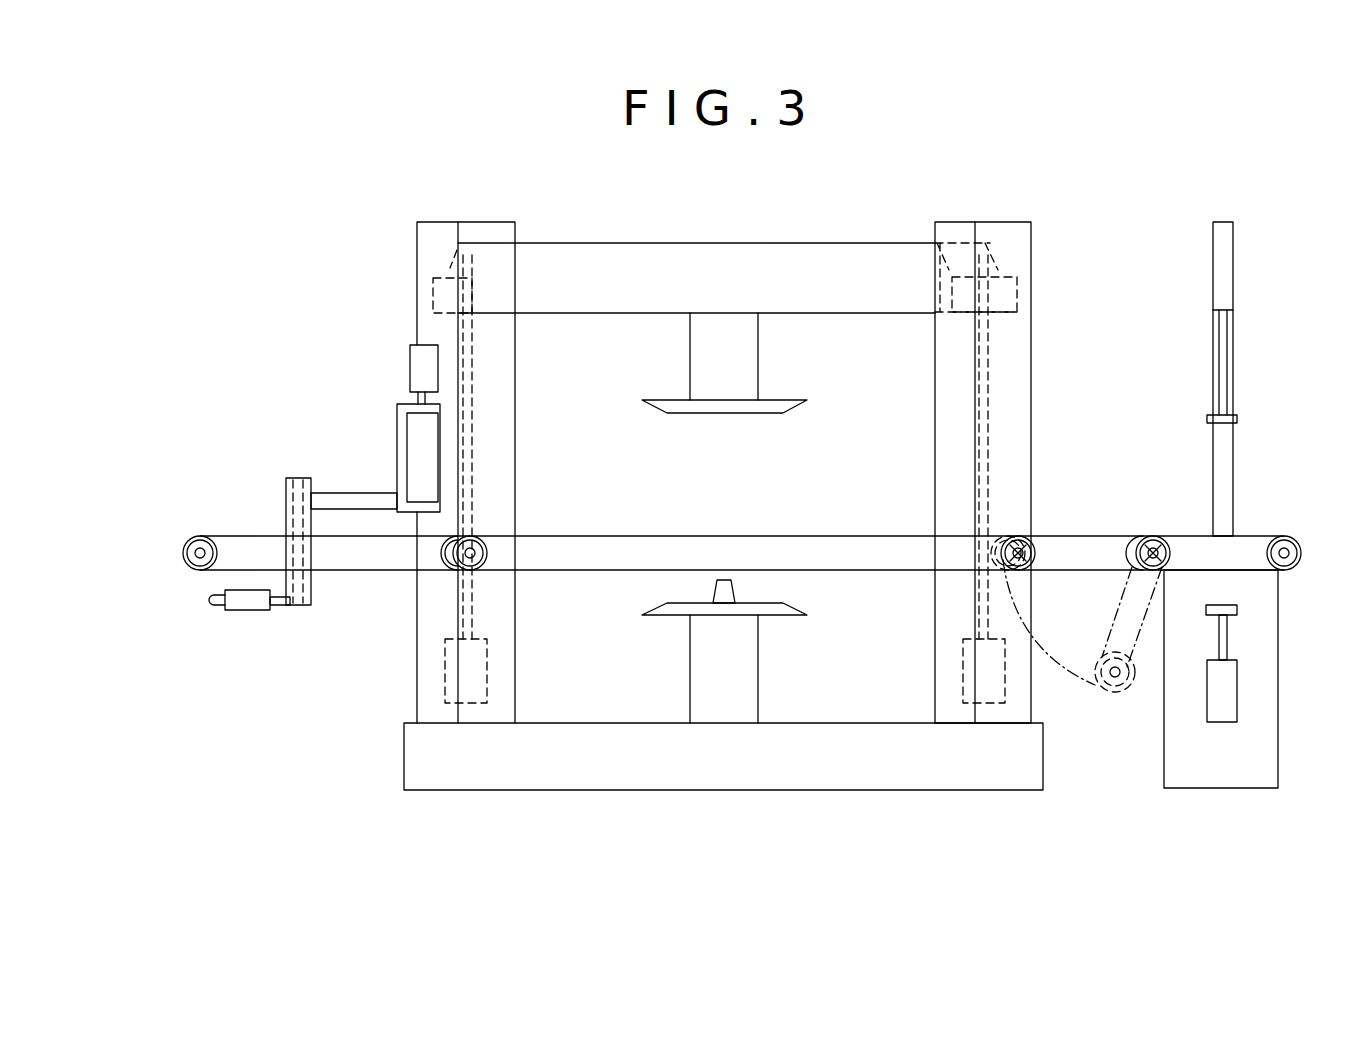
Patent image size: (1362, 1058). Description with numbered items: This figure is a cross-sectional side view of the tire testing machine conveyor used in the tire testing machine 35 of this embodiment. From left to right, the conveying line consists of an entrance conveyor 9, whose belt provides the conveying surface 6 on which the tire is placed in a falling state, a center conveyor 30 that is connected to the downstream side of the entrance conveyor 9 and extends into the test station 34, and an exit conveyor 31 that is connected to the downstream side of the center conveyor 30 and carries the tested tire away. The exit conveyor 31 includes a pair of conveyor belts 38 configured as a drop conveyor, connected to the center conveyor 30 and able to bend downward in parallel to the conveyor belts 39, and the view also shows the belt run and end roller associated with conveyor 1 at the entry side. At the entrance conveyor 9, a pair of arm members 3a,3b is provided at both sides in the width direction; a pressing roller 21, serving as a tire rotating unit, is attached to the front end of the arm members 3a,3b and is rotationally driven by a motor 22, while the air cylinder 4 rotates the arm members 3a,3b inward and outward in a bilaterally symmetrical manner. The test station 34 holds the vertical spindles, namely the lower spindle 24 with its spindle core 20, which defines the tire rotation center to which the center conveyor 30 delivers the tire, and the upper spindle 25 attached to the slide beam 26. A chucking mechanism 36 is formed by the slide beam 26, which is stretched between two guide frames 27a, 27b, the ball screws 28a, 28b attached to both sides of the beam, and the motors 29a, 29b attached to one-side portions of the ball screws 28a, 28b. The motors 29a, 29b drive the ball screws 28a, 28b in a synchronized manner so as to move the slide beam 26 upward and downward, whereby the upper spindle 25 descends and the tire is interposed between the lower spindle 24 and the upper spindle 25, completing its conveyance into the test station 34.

The conveyor belt 1 is at (232, 538).
The arm members 3a,3b is at (349, 493).
The air cylinder 4 is at (250, 610).
The conveying surface 6 is at (265, 538).
The entrance conveyor 9 is at (176, 567).
The spindle core 20 is at (733, 582).
The pressing roller 21 is at (440, 456).
The motor 22 is at (410, 366).
The lower spindle 24 is at (745, 668).
The upper spindle 25 is at (745, 356).
The slide beam 26 is at (840, 253).
The guide frame 27a is at (439, 232).
The guide frame 27b is at (1000, 232).
The ball screw 28a is at (458, 316).
The ball screw 28b is at (985, 363).
The motor 29a is at (445, 667).
The motor 29b is at (1005, 684).
The center conveyor 30 is at (727, 587).
The exit conveyor 31 is at (1233, 505).
The test station 34 is at (696, 287).
The tire testing machine 35 is at (266, 315).
The chucking mechanism 36 is at (1050, 465).
The conveyor belts 38 is at (1099, 545).
The conveyor belts 39 is at (1258, 540).